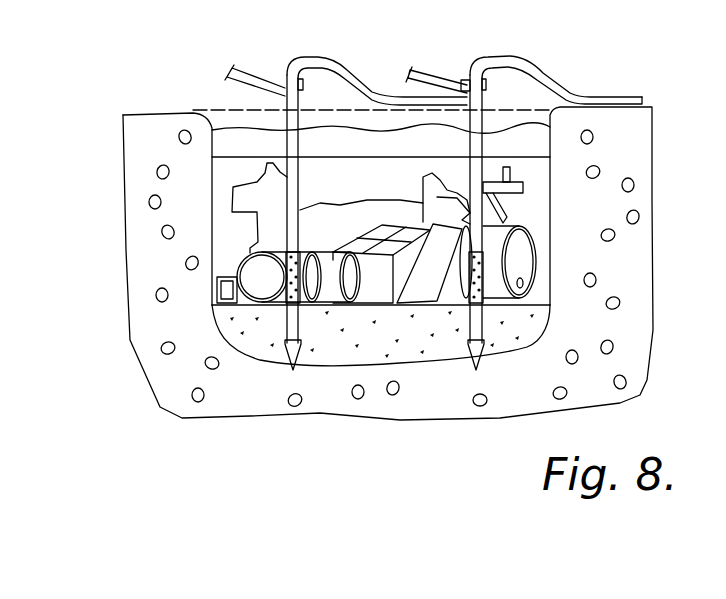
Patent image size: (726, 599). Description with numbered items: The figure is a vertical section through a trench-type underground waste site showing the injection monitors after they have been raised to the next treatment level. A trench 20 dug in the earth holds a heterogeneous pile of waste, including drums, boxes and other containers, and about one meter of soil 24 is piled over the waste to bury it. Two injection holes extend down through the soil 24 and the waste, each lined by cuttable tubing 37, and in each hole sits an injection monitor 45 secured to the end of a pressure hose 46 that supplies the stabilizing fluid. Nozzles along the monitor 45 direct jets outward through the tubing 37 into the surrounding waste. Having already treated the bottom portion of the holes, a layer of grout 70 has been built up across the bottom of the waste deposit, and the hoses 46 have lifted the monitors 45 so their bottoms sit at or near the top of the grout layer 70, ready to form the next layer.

The trench 20 is at (210, 250).
The soil 24 is at (217, 132).
The tubing 37 is at (277, 100).
The injection monitor 45 is at (290, 286).
The pressure hose 46 is at (318, 63).
The layer of grout 70 is at (528, 317).